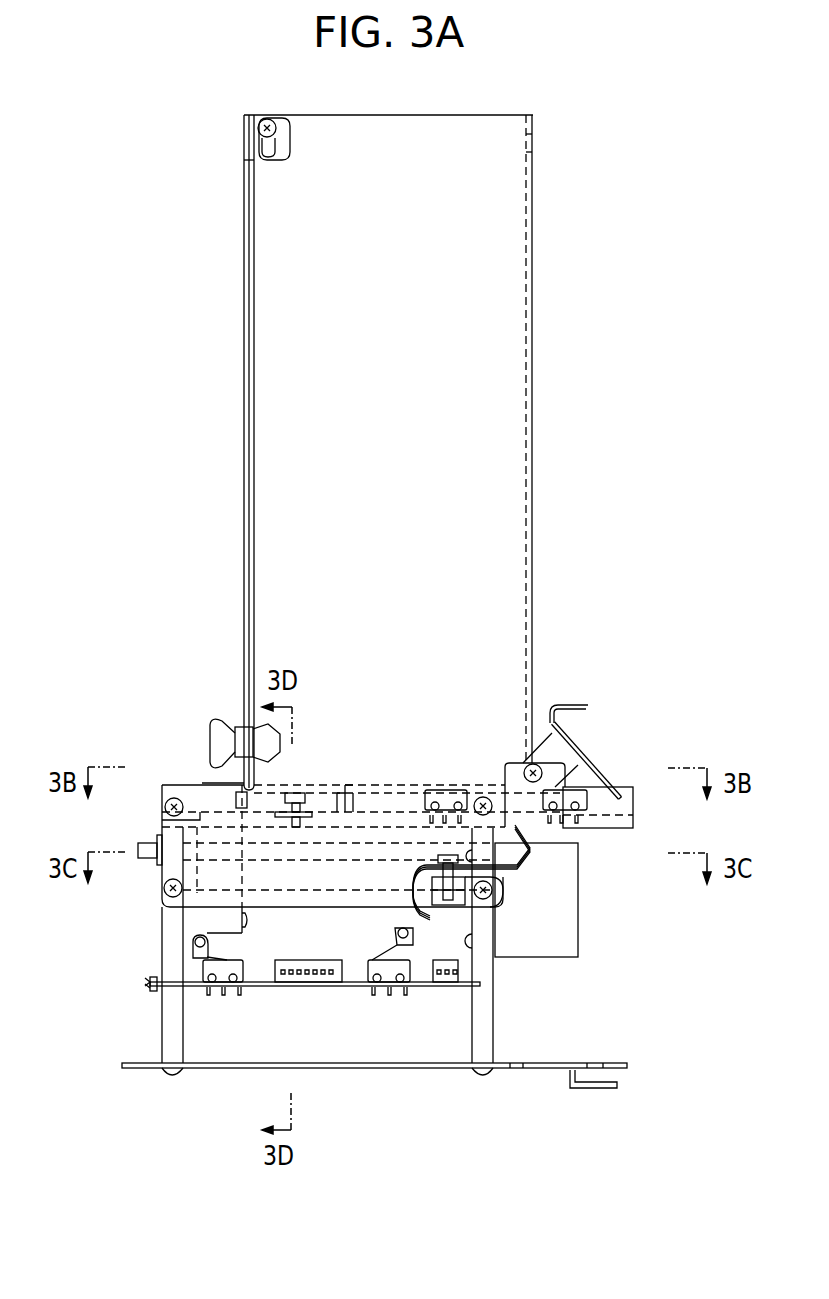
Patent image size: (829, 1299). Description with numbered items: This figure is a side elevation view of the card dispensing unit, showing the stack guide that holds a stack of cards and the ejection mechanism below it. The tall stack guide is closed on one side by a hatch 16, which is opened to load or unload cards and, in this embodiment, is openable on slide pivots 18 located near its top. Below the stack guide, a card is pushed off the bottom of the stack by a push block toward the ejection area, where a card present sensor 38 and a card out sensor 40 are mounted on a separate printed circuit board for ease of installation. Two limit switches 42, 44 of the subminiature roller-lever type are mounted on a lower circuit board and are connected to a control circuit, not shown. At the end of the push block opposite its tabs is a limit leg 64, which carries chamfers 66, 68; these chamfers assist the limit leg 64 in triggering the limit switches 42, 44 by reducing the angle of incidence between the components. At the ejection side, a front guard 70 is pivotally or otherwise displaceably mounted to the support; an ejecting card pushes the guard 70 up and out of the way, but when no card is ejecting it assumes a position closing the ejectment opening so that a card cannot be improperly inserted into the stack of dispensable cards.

The hatch 16 is at (243, 352).
The slide pivots 18 is at (279, 119).
The card present sensor 38 is at (448, 793).
The card out sensor 40 is at (573, 793).
The limit switch 42 is at (230, 983).
The limit switch 44 is at (410, 970).
The limit leg 64 is at (213, 918).
The chamfer 66 is at (240, 932).
The chamfer 68 is at (193, 932).
The front guard 70 is at (567, 733).